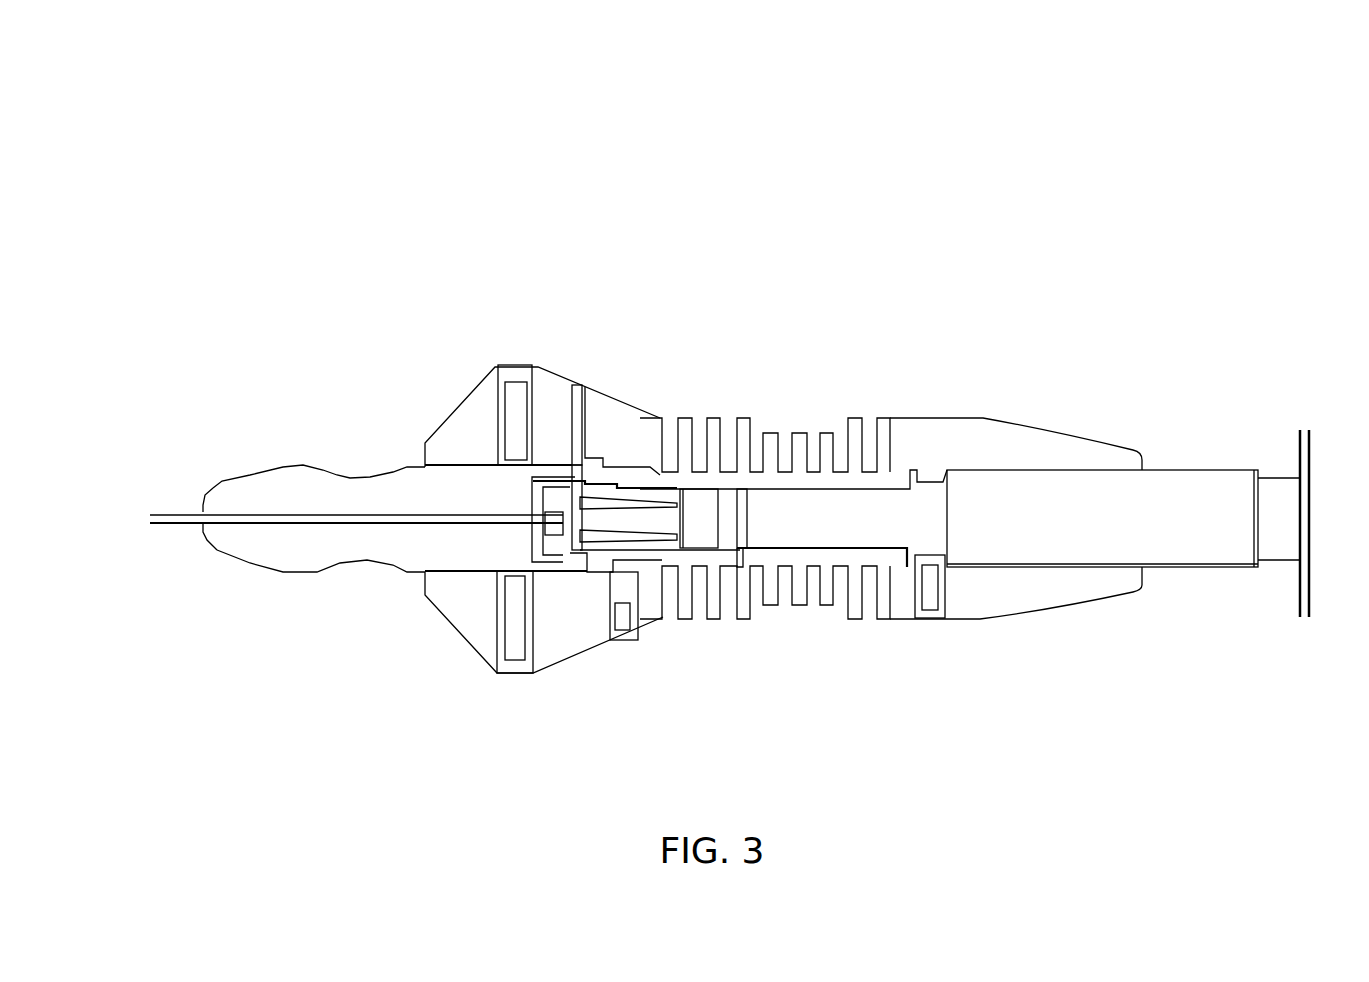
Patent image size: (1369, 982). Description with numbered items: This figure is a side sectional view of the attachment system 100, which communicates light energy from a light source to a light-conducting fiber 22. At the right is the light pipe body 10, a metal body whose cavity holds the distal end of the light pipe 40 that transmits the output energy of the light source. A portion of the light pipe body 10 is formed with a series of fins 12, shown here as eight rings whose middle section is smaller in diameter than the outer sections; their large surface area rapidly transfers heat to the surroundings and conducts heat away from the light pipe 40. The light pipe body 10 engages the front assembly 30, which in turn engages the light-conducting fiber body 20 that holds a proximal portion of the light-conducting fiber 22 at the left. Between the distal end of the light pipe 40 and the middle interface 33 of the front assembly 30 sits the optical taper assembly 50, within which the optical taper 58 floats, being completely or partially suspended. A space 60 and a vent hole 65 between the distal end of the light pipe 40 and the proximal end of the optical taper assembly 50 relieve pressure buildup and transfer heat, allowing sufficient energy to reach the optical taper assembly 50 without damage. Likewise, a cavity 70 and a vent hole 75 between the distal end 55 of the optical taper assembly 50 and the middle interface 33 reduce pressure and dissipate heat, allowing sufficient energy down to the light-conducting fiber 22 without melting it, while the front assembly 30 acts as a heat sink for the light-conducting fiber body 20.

The attachment system 100 is at (264, 83).
The light pipe body 10 is at (1003, 445).
The fins 12 is at (893, 418).
The light-conducting fiber body 20 is at (313, 485).
The light-conducting fiber 22 is at (158, 515).
The front assembly 30 is at (460, 595).
The middle interface 33 is at (545, 530).
The light pipe 40 is at (1152, 532).
The optical taper assembly 50 is at (633, 468).
The distal end 55 is at (570, 508).
The optical taper 58 is at (635, 518).
The space 60 is at (695, 505).
The vent hole 65 is at (742, 565).
The cavity 70 is at (560, 530).
The vent hole 75 is at (582, 395).